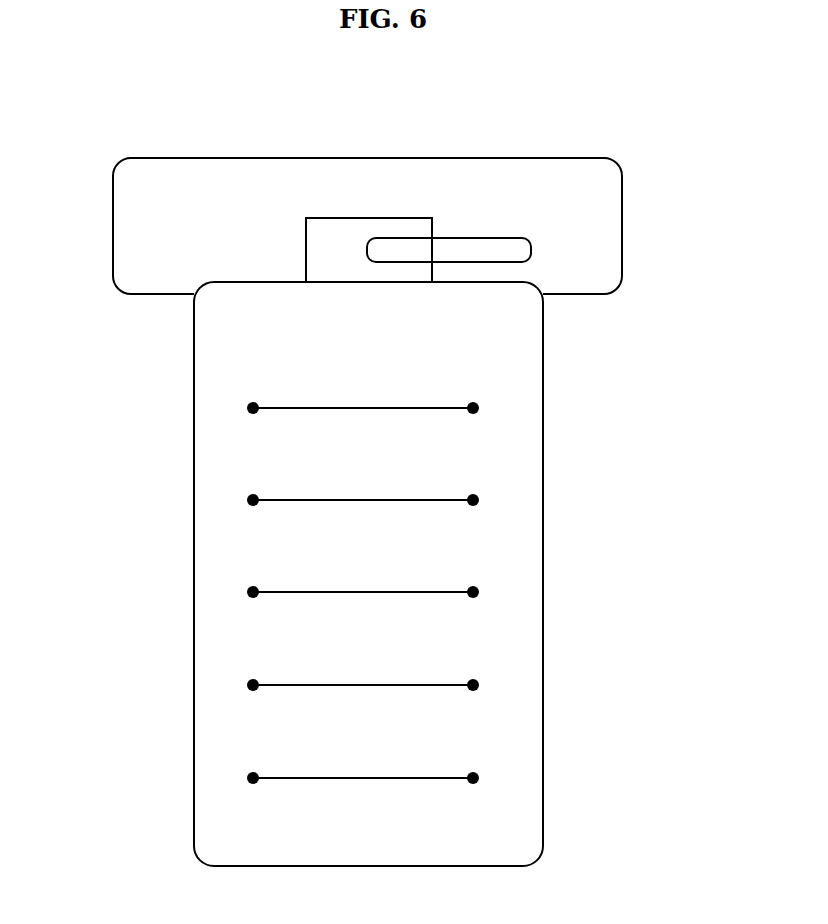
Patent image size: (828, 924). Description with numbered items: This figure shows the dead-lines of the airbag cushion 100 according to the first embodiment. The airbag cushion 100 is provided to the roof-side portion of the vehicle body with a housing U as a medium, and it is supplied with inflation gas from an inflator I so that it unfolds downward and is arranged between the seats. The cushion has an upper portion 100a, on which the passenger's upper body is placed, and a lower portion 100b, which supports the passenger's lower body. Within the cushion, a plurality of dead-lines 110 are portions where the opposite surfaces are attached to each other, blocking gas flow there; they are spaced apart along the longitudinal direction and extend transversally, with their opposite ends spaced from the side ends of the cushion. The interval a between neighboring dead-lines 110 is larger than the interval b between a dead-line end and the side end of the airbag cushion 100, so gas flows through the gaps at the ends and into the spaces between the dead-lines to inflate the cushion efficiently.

The airbag cushion 100 is at (553, 378).
The upper portion of the airbag cushion 100a is at (220, 355).
The lower portion of the airbag cushion 100b is at (520, 819).
The dead-line 110 is at (413, 408).
The inflator I is at (457, 252).
The housing U is at (570, 158).
The interval between dead-lines a is at (387, 592).
The interval between dead-line end and side end of the airbag cushion b is at (542, 592).